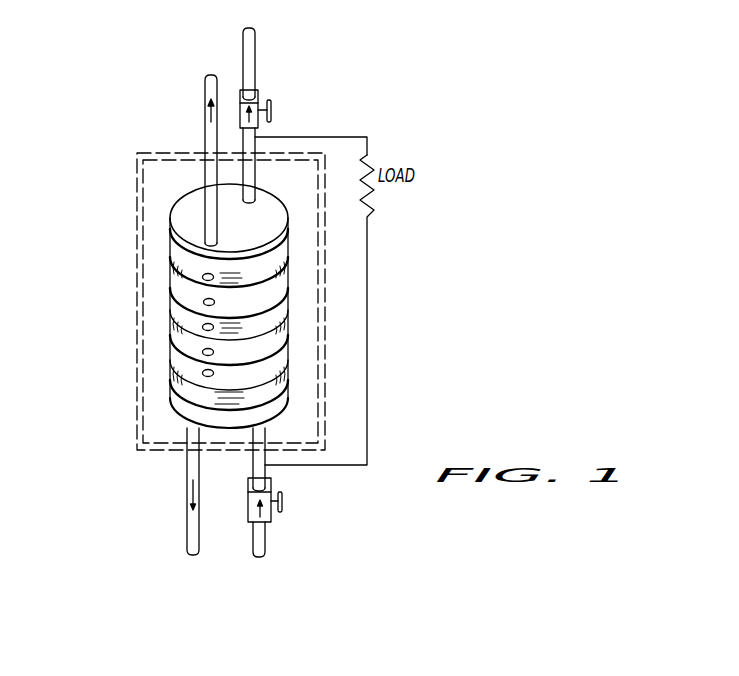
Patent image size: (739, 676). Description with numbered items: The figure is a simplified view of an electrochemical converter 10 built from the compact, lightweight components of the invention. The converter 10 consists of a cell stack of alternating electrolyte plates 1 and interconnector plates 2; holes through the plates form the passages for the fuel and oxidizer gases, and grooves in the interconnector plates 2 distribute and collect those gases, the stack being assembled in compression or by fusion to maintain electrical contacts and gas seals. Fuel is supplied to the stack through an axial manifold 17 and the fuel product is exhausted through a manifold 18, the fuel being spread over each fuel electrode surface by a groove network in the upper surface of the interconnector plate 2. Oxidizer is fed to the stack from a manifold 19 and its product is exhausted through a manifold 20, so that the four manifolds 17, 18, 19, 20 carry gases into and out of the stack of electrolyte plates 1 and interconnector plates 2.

The electrolyte plate 1 is at (273, 290).
The interconnector plate 2 is at (277, 310).
The electrochemical converter 10 is at (120, 138).
The fuel supply manifold 17 is at (325, 492).
The fuel product manifold 18 is at (175, 137).
The oxidizer supply manifold 19 is at (295, 104).
The oxidizer product manifold 20 is at (153, 500).